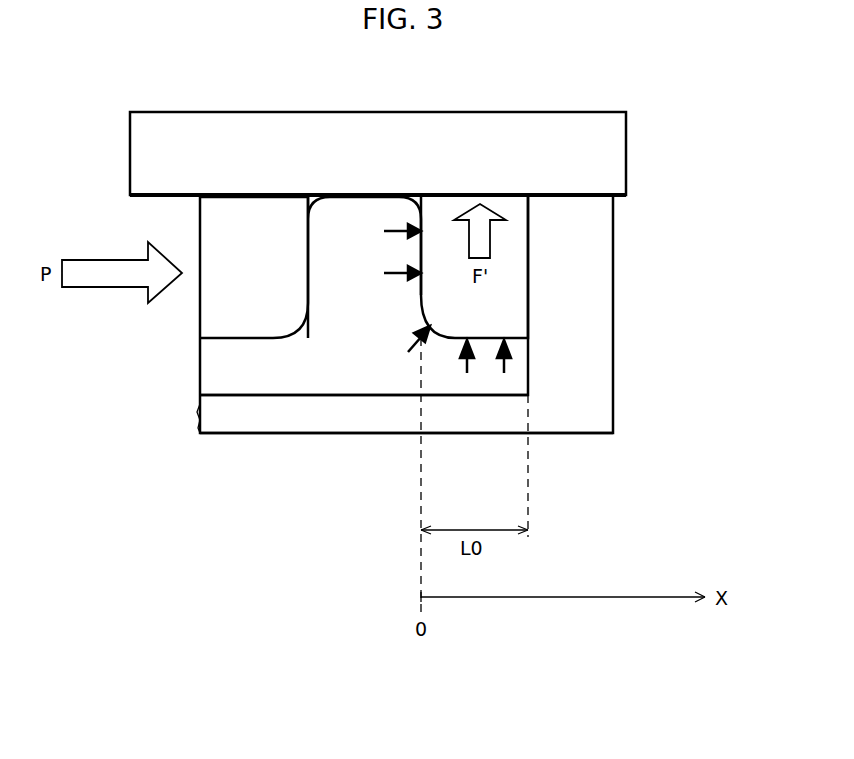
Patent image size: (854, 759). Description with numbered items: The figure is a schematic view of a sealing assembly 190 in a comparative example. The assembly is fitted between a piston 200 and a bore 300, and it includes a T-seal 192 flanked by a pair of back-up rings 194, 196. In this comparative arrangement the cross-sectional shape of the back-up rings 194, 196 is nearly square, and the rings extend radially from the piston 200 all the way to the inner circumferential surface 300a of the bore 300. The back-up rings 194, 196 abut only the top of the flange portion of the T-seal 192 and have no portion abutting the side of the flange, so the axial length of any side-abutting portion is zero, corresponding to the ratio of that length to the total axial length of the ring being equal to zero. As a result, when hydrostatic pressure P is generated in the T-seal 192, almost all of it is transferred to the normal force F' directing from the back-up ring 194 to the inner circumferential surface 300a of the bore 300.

The bore 300 is at (553, 122).
The inner circumferential surface of the bore 300a is at (623, 197).
The sealing assembly 190 is at (187, 372).
The T-seal 192 is at (333, 370).
The back-up ring 194 is at (512, 305).
The back-up ring 196 is at (223, 318).
The piston 200 is at (257, 427).